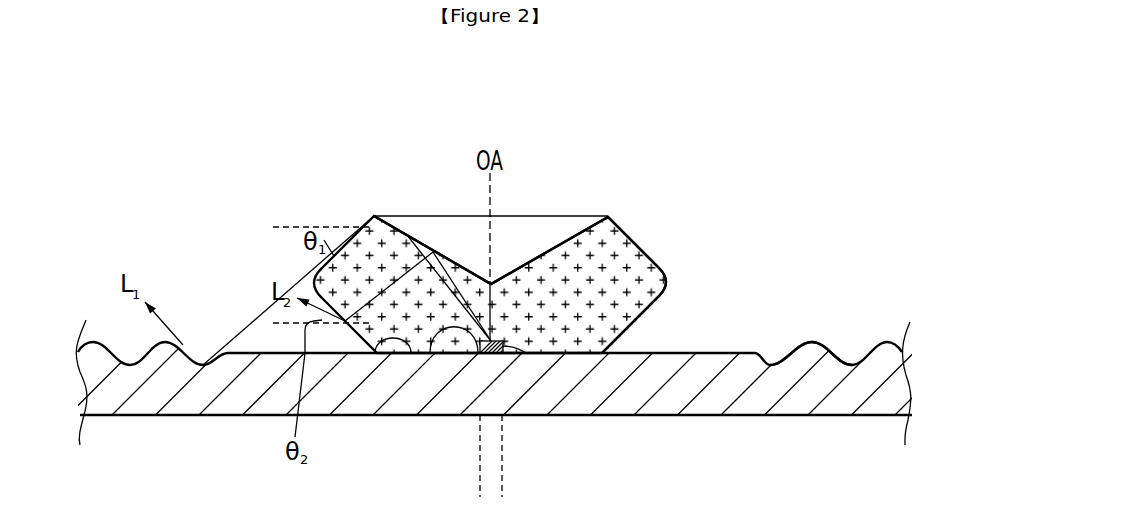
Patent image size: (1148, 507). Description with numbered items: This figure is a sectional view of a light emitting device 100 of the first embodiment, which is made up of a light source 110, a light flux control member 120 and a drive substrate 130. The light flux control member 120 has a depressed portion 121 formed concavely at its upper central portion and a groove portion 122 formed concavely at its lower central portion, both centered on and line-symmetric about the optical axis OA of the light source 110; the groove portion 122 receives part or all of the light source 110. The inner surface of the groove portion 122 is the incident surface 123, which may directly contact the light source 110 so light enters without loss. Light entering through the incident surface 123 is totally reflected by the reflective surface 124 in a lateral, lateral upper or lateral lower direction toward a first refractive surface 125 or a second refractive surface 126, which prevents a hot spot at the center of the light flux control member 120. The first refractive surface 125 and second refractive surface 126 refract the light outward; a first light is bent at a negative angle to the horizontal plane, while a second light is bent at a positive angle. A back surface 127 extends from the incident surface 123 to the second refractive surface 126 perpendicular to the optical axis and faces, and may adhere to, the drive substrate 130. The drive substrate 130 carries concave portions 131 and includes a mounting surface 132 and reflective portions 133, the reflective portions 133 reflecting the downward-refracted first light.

The light emitting device 100 is at (902, 91).
The light source 110 is at (512, 350).
The light flux control member 120 is at (624, 212).
The depressed portion 121 is at (533, 243).
The groove portion 122 is at (455, 487).
The incident surface 123 is at (430, 353).
The reflective surface 124 is at (587, 228).
The first refractive surface 125 is at (640, 248).
The second refractive surface 126 is at (640, 313).
The back surface 127 is at (375, 353).
The drive substrate 130 is at (750, 407).
The concave portions 131 is at (773, 360).
The mounting surface 132 is at (618, 358).
The reflective portions 133 is at (793, 347).